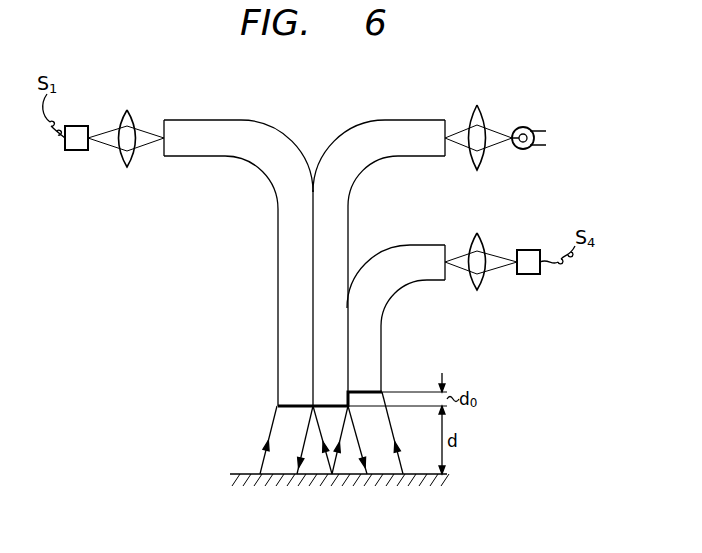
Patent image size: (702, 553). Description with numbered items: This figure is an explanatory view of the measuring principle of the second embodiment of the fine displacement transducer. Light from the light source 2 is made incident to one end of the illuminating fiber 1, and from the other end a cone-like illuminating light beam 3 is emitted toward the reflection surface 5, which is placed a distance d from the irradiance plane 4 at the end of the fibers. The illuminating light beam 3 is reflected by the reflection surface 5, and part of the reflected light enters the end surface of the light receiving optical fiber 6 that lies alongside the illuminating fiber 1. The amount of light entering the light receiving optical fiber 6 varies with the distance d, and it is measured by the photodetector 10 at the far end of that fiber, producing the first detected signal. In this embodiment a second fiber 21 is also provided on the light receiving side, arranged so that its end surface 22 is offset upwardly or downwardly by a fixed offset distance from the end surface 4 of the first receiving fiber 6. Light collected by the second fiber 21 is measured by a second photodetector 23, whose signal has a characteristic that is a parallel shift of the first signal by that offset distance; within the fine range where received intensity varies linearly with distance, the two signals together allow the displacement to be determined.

The illuminating fiber 1 is at (348, 213).
The light source 2 is at (520, 127).
The illuminating light beam 3 is at (353, 412).
The irradiance plane 4 is at (290, 404).
The reflection surface 5 is at (418, 477).
The light receiving optical fiber 6 is at (278, 210).
The photodetector 10 is at (82, 126).
The second fiber 21 is at (381, 331).
The recessed end face of fiber 21 22 is at (380, 392).
The photodetector 23 is at (523, 250).